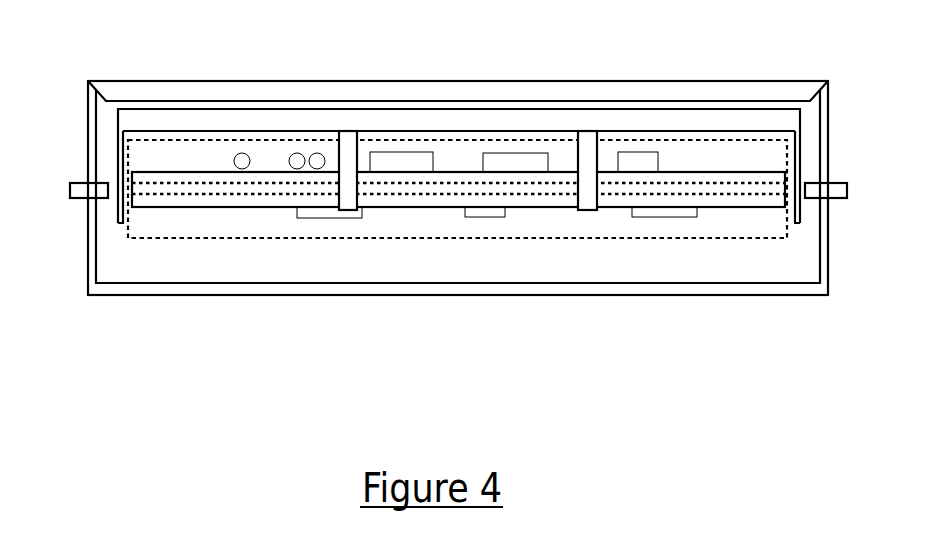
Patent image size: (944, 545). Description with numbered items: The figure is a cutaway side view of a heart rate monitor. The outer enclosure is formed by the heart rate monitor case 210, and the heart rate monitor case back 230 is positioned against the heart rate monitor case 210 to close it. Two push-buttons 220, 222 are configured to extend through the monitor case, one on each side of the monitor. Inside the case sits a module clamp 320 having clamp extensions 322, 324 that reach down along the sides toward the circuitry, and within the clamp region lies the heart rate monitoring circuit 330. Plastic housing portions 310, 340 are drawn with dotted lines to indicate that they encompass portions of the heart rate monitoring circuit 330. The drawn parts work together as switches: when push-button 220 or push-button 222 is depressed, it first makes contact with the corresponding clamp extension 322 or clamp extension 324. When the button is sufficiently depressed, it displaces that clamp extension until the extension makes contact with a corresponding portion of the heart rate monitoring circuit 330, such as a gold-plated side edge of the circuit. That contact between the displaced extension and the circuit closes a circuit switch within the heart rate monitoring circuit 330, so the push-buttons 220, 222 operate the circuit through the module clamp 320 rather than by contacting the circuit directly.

The heart rate monitor case 210 is at (513, 292).
The push-button 220 is at (70, 198).
The push-button 222 is at (850, 198).
The heart rate monitor case back 230 is at (635, 85).
The plastic housing 310 is at (172, 228).
The module clamp 320 is at (510, 115).
The clamp extension 322 is at (117, 152).
The clamp extension 324 is at (803, 150).
The heart rate monitoring circuit 330 is at (720, 208).
The plastic housing 340 is at (165, 150).